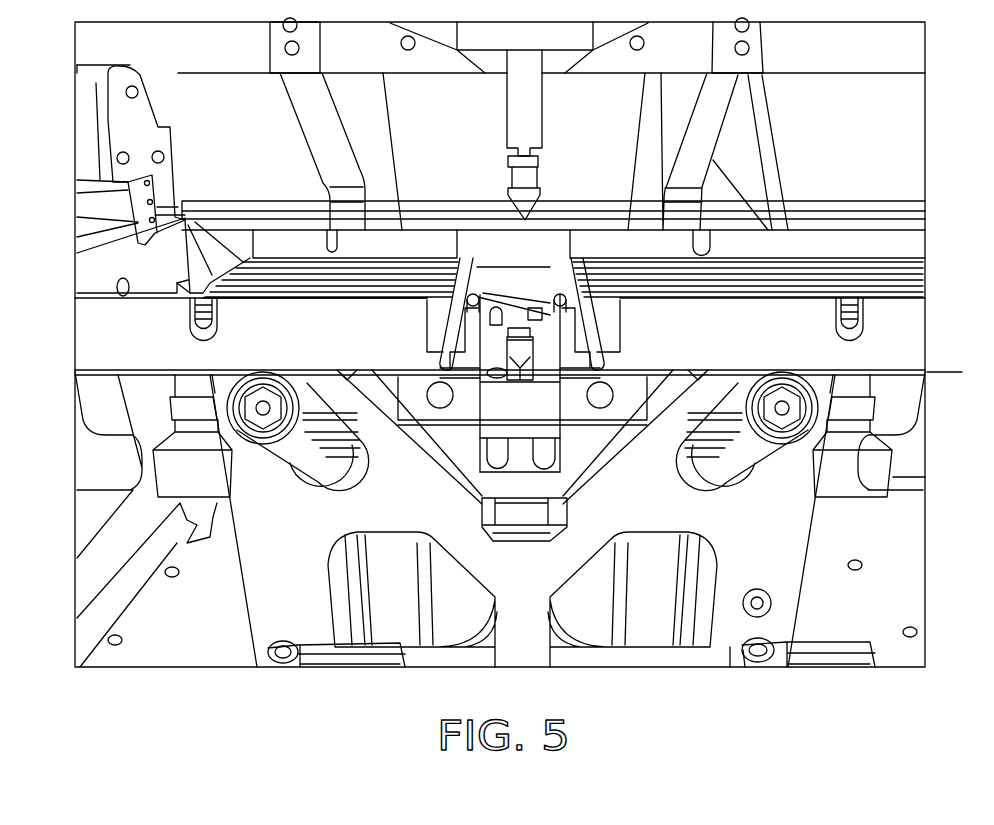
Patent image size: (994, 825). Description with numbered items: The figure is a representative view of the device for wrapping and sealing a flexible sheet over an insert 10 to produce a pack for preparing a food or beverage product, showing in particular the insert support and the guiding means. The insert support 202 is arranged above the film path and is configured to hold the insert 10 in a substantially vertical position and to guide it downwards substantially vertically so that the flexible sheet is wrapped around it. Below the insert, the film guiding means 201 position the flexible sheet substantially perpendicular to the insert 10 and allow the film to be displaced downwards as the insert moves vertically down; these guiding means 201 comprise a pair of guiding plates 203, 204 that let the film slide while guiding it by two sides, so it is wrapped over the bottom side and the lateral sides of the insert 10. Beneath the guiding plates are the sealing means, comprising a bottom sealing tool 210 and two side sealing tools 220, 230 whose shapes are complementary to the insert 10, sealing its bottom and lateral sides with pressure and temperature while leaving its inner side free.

The insert 10 is at (538, 177).
The film guiding means 201 is at (282, 230).
The insert support 202 is at (537, 127).
The guiding plate 203 is at (123, 339).
The guiding plate 204 is at (822, 270).
The bottom sealing tool 210 is at (480, 418).
The side sealing tool 220 is at (412, 410).
The side sealing tool 230 is at (633, 410).